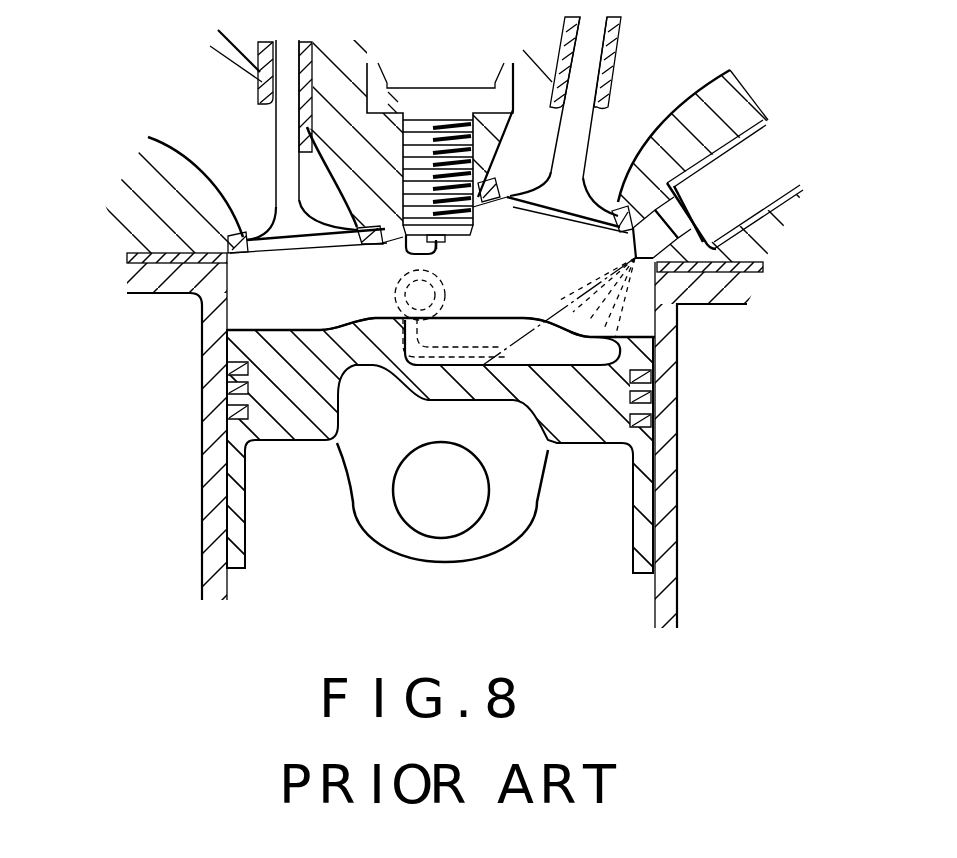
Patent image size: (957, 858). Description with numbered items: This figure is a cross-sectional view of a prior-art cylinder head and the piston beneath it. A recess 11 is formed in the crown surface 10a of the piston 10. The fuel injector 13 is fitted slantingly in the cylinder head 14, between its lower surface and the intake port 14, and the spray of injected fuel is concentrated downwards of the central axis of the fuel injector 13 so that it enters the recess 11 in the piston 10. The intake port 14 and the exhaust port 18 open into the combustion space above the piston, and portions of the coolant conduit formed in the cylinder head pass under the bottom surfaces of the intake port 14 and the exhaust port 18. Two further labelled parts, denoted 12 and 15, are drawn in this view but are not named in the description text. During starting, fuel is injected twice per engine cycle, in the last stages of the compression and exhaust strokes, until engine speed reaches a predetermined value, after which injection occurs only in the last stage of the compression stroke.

The piston 10 is at (293, 422).
The crown surface 10a is at (330, 320).
The recess 11 is at (483, 367).
The spark plug 12 is at (440, 244).
The fuel injector 13 is at (758, 197).
The intake port 14 is at (657, 102).
The intake port of cylinder head 15 is at (163, 193).
The exhaust port 18 is at (224, 148).